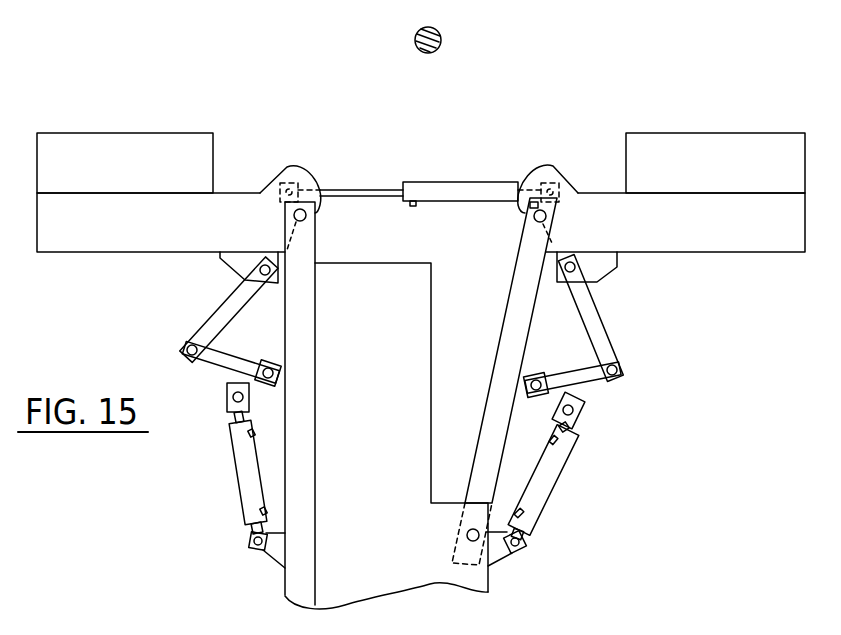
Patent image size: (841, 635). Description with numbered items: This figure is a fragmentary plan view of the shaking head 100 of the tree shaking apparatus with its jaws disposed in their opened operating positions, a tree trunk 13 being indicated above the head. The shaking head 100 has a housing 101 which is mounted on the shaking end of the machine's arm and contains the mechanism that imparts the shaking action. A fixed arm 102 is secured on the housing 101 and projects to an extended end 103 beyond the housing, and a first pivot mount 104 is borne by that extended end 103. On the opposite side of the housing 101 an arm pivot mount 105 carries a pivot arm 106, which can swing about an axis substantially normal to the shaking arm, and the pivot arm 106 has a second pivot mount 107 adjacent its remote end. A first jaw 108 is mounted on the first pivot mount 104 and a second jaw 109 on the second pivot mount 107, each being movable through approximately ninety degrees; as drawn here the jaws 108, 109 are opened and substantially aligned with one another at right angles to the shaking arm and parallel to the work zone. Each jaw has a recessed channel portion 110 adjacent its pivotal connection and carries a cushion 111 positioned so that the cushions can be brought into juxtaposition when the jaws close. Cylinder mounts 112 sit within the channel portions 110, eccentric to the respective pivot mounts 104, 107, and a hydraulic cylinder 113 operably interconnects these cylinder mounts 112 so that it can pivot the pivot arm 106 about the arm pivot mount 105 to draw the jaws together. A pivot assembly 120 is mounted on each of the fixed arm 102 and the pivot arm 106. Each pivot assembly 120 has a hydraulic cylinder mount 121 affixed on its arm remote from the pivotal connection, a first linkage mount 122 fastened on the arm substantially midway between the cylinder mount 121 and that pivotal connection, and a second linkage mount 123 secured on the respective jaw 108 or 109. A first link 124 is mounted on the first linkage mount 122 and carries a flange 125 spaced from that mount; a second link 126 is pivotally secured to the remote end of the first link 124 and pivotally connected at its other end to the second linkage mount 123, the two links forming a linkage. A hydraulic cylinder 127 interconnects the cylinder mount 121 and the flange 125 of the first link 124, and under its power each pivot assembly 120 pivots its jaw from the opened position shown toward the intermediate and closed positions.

The tree trunk 13 is at (441, 40).
The shaking head 100 is at (572, 468).
The housing 101 is at (392, 400).
The fixed arm 102 is at (285, 318).
The extended end 103 is at (316, 240).
The first pivot mount 104 is at (307, 218).
The arm pivot mount 105 is at (466, 535).
The pivot arm 106 is at (496, 355).
The second pivot mount 107 is at (533, 218).
The first jaw 108 is at (148, 232).
The second jaw 109 is at (698, 232).
The channel portion 110 is at (263, 192).
The cushion 111 is at (134, 174).
The cylinder mount 112 is at (291, 180).
The hydraulic cylinder 113 is at (460, 180).
The pivot assembly 120 is at (186, 332).
The hydraulic cylinder mount 121 is at (272, 562).
The first linkage mount 122 is at (280, 398).
The second linkage mount 123 is at (230, 270).
The first link 124 is at (223, 370).
The flange 125 is at (223, 384).
The second link 126 is at (222, 305).
The hydraulic cylinder 127 is at (232, 462).